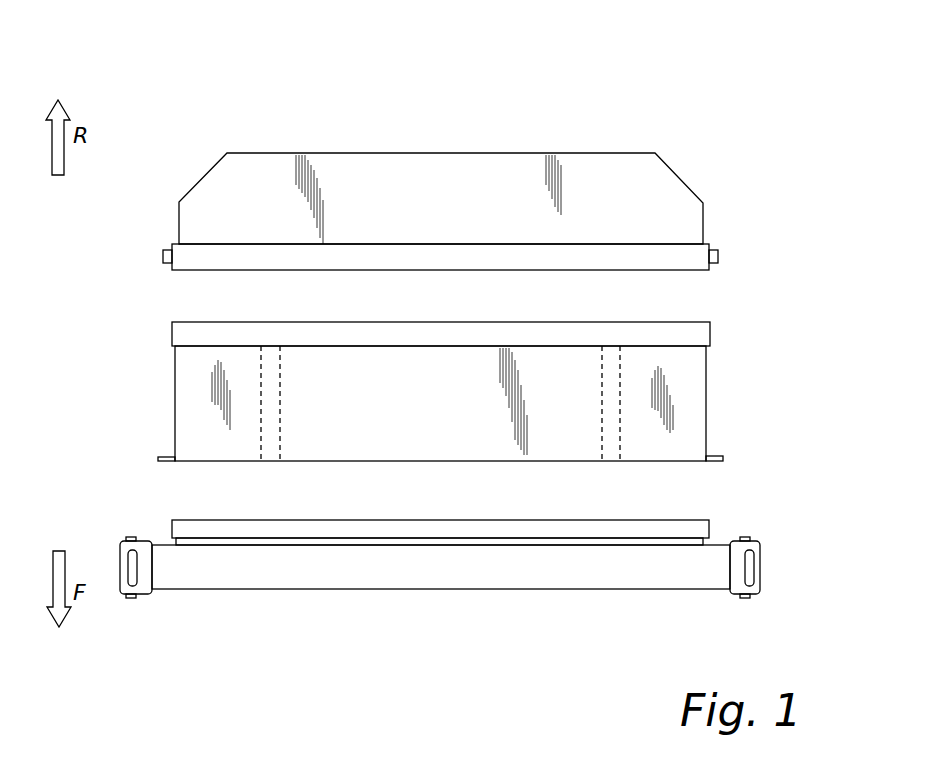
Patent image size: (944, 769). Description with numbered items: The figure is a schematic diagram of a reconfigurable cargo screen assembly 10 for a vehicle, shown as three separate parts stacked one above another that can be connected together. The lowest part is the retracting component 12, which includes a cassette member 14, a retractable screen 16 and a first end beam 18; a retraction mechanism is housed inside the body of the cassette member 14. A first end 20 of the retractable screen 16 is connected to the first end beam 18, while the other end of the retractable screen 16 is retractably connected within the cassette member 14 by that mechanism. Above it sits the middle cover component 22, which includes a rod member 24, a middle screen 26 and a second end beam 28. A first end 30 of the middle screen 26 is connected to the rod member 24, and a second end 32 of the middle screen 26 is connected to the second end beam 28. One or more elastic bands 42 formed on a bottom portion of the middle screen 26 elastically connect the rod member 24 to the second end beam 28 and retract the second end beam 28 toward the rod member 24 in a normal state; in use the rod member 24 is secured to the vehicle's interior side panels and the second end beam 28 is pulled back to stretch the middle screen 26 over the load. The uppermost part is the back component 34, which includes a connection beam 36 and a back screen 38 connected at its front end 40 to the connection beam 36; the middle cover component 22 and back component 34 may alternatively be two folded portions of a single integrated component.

The reconfigurable cargo screen assembly 10 is at (160, 56).
The retracting component 12 is at (778, 508).
The cassette member 14 is at (655, 570).
The retractable screen 16 is at (192, 543).
The first end beam 18 is at (350, 527).
The first end 20 is at (453, 540).
The middle cover component 22 is at (778, 315).
The rod member 24 is at (718, 452).
The middle screen 26 is at (682, 393).
The second end beam 28 is at (332, 335).
The first end 30 is at (438, 461).
The second end 32 is at (422, 348).
The back component 34 is at (778, 146).
The connection beam 36 is at (463, 257).
The back screen 38 is at (495, 178).
The front end 40 is at (385, 245).
The elastic bands 42 is at (280, 435).